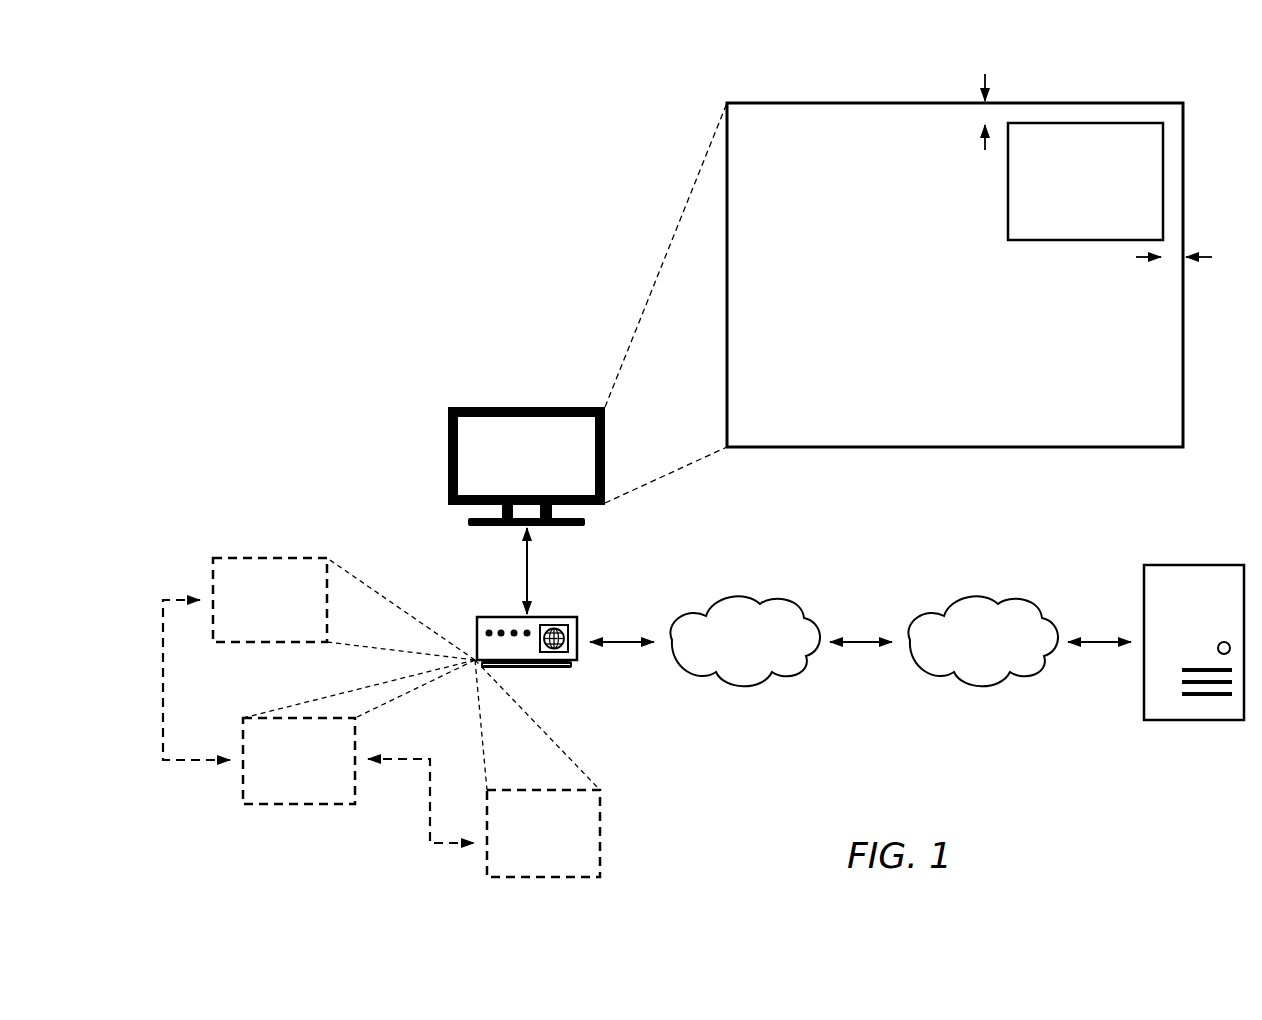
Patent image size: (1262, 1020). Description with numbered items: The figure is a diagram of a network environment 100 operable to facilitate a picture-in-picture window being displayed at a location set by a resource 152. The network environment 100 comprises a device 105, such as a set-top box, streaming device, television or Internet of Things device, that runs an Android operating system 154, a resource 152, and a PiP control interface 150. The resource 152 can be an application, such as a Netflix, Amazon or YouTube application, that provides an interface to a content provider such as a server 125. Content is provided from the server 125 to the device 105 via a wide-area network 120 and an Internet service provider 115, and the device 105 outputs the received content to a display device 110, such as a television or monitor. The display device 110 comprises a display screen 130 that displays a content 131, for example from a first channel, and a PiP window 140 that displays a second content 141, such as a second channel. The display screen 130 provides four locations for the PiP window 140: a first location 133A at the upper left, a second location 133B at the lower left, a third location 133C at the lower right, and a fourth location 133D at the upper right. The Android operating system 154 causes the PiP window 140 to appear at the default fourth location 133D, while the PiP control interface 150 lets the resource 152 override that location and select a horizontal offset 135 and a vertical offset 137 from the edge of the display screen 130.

The network environment 100 is at (246, 68).
The device 105 is at (476, 634).
The display device 110 is at (450, 430).
The Internet service provider 115 is at (745, 641).
The wide-area network 120 is at (983, 641).
The server 125 is at (1194, 642).
The display screen 130 is at (876, 100).
The content 131 is at (955, 275).
The first location 133A is at (738, 112).
The second location 133B is at (738, 400).
The third location 133C is at (1174, 400).
The fourth location 133D is at (1174, 112).
The horizontal offset 135 is at (1176, 250).
The vertical offset 137 is at (972, 113).
The PiP window 140 is at (1060, 116).
The second content 141 is at (1085, 183).
The PiP control interface 150 is at (299, 761).
The resource 152 is at (543, 833).
The Android operating system 154 is at (270, 600).